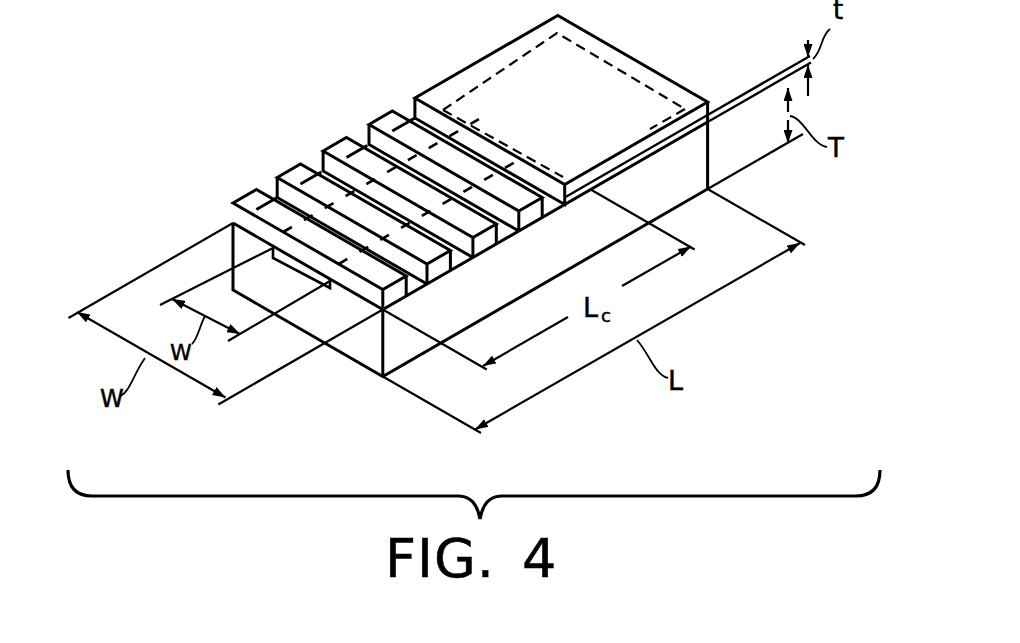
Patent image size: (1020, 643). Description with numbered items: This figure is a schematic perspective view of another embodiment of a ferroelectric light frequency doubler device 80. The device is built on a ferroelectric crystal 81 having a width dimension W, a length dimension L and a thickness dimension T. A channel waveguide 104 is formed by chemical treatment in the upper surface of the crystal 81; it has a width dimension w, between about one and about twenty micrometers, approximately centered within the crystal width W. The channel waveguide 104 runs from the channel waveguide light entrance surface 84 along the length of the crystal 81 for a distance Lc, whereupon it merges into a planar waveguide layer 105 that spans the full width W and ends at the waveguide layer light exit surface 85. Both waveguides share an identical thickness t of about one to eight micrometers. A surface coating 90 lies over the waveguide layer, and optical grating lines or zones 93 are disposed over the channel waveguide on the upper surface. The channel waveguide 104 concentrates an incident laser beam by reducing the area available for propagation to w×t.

The ferroelectric light frequency doubler device 80 is at (286, 133).
The ferroelectric crystal 81 is at (378, 374).
The channel waveguide light entrance surface 84 is at (277, 249).
The waveguide layer light exit surface 85 is at (612, 72).
The surface coating 90 is at (648, 124).
The optical grating lines or zones 93 is at (352, 146).
The channel waveguide 104 is at (328, 248).
The planar waveguide layer 105 is at (730, 125).